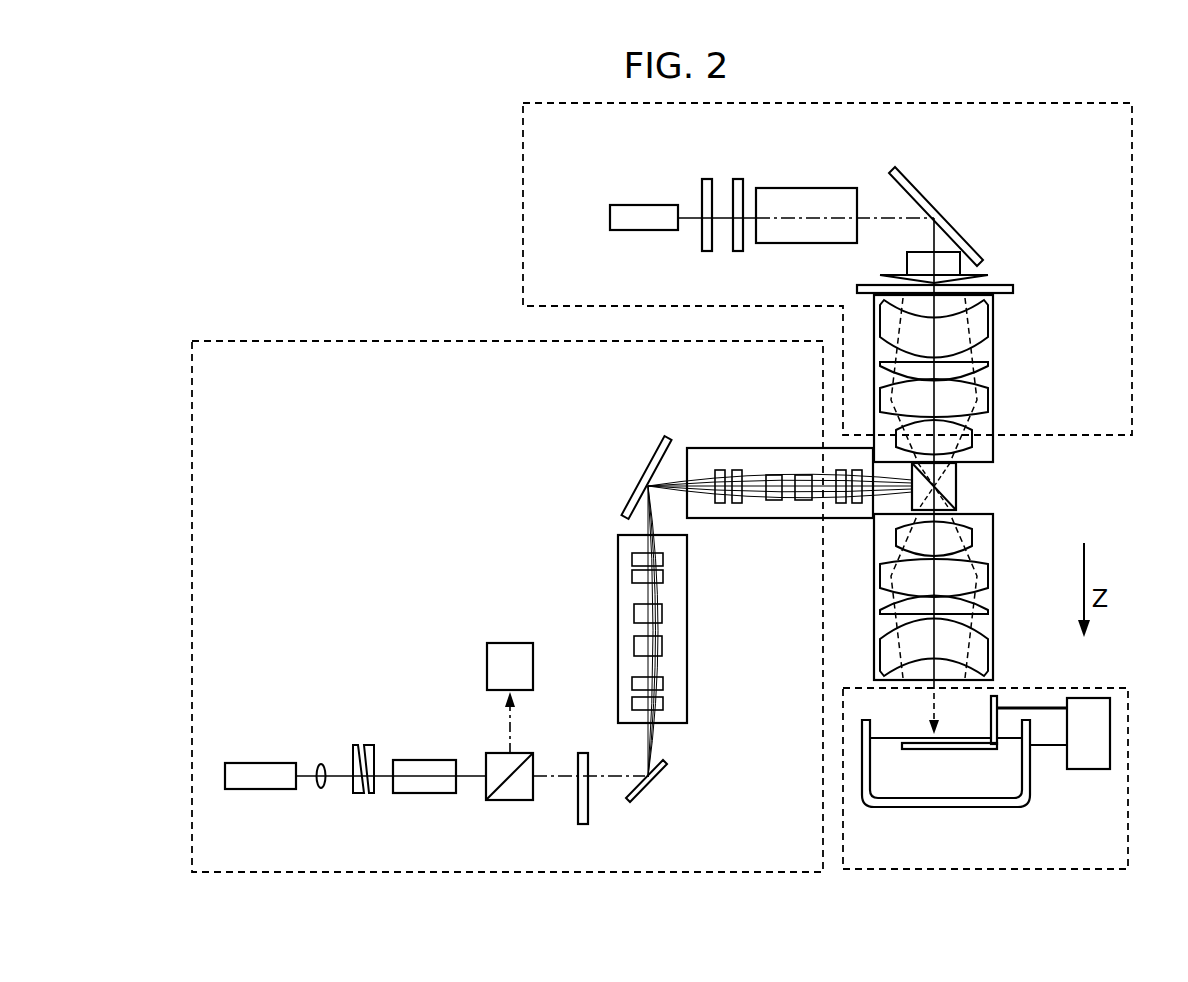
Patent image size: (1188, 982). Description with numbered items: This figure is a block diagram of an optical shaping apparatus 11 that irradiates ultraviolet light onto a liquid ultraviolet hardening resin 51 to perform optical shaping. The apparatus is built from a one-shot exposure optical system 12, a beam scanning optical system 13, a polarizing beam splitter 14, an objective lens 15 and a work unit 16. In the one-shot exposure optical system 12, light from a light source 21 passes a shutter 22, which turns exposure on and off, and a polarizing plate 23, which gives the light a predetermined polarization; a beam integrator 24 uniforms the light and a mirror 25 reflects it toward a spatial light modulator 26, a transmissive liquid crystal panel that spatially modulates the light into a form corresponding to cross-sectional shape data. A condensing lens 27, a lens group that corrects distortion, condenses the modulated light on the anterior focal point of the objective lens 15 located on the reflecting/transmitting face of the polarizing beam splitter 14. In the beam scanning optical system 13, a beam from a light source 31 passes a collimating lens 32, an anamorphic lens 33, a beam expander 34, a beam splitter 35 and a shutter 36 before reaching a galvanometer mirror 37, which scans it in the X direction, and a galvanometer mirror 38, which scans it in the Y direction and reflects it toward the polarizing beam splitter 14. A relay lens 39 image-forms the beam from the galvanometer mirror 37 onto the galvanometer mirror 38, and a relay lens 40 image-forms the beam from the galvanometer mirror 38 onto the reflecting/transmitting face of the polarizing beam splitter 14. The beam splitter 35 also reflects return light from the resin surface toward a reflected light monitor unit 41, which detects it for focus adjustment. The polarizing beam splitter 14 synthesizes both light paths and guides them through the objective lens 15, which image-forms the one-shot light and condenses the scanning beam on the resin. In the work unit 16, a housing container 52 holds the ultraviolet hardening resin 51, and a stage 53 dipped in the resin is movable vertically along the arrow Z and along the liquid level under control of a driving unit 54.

The optical shaping apparatus 11 is at (272, 198).
The one-shot exposure optical system 12 is at (522, 198).
The beam scanning optical system 13 is at (352, 341).
The polarizing beam splitter 14 is at (956, 488).
The objective lens 15 is at (993, 593).
The work unit 16 is at (1128, 745).
The light source 21 is at (610, 218).
The shutter 22 is at (705, 180).
The polarizing plate 23 is at (738, 180).
The beam integrator 24 is at (803, 188).
The mirror 25 is at (940, 207).
The spatial light modulator 26 is at (1013, 289).
The condensing lens 27 is at (993, 378).
The light source 31 is at (253, 790).
The collimating lens 32 is at (321, 789).
The anamorphic lens 33 is at (372, 802).
The beam expander 34 is at (421, 760).
The beam splitter 35 is at (510, 800).
The shutter 36 is at (589, 800).
The galvanometer mirror 37 is at (653, 779).
The galvanometer mirror 38 is at (643, 482).
The relay lens 39 is at (688, 635).
The relay lens 40 is at (762, 448).
The reflected light monitor unit 41 is at (510, 643).
The ultraviolet hardening resin 51 is at (893, 780).
The housing container 52 is at (1007, 806).
The stage 53 is at (948, 752).
The driving unit 54 is at (1090, 770).